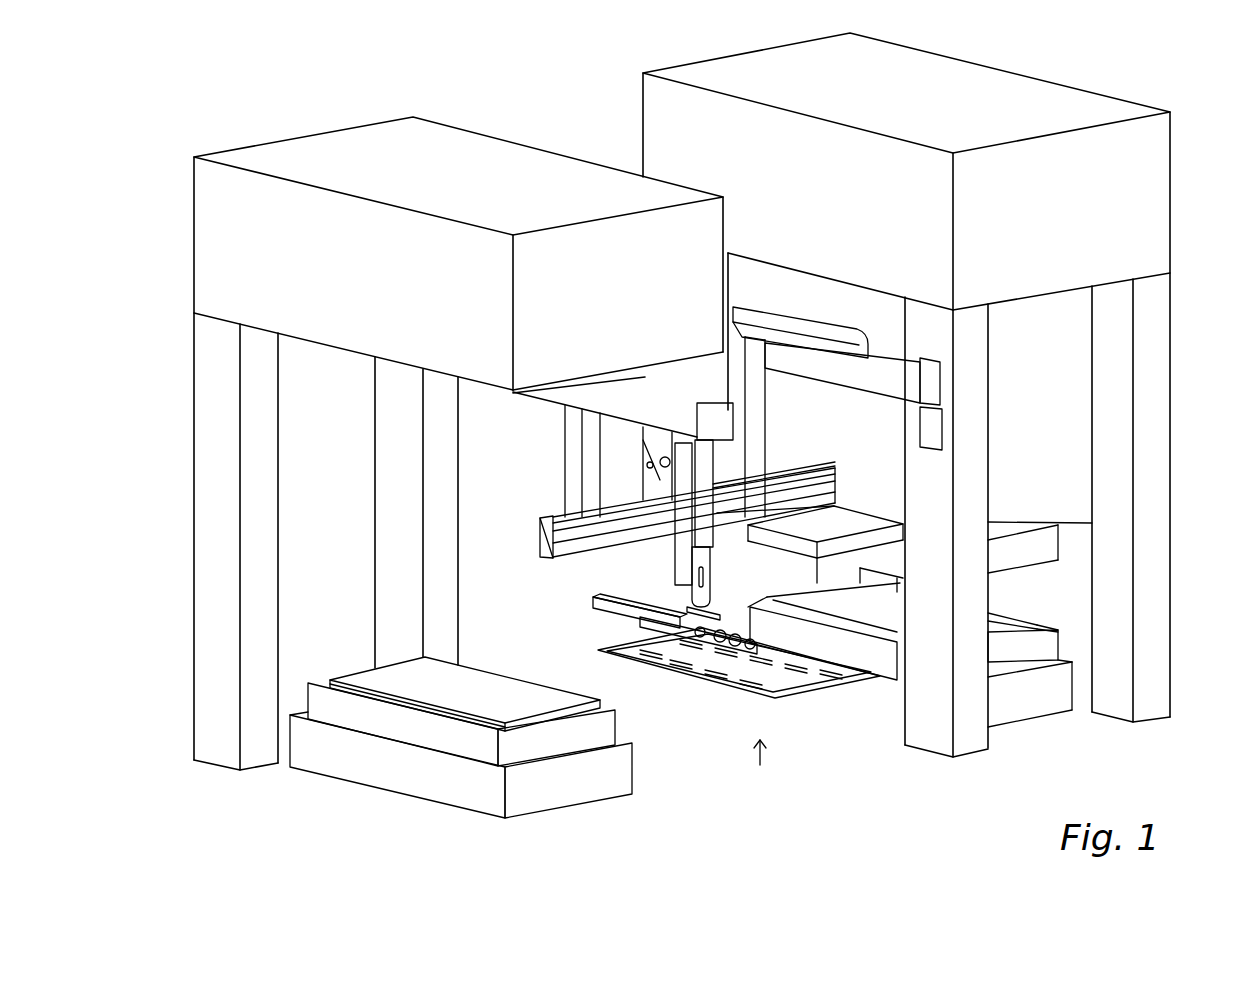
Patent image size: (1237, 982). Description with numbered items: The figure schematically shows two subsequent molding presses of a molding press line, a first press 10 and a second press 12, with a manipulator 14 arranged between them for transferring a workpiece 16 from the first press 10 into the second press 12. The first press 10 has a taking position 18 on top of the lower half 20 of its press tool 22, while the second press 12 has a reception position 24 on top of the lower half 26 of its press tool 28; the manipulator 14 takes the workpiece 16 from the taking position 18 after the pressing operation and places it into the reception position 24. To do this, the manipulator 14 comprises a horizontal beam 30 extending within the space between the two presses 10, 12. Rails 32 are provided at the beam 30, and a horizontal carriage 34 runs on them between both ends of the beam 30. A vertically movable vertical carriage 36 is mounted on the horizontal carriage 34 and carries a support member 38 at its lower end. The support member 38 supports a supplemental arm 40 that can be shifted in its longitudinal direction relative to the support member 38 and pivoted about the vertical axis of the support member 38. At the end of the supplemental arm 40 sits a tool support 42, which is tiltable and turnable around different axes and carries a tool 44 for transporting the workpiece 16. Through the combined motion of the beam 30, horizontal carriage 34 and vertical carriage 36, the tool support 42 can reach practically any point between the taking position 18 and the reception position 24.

The first press 10 is at (318, 114).
The second press 12 is at (1108, 77).
The manipulator 14 is at (766, 773).
The workpiece 16 is at (790, 677).
The taking position 18 is at (393, 672).
The lower half 20 is at (372, 715).
The press tool 22 is at (625, 728).
The reception position 24 is at (993, 622).
The lower half 26 is at (1045, 652).
The press tool 28 is at (1012, 660).
The horizontal beam 30 is at (548, 518).
The rails 32 is at (540, 556).
The horizontal carriage 34 is at (727, 497).
The vertical carriage 36 is at (703, 530).
The support member 38 is at (673, 606).
The supplemental arm 40 is at (593, 609).
The tool support 42 is at (728, 660).
The tool 44 is at (823, 685).